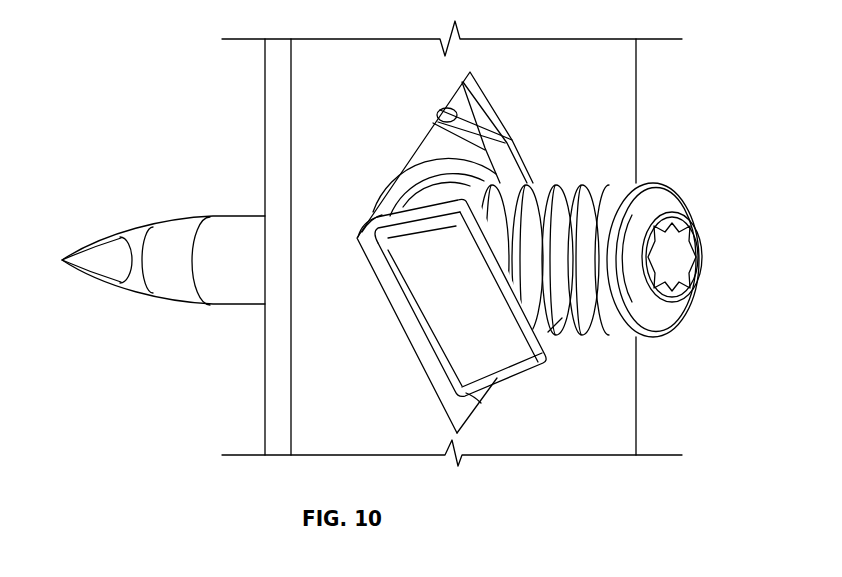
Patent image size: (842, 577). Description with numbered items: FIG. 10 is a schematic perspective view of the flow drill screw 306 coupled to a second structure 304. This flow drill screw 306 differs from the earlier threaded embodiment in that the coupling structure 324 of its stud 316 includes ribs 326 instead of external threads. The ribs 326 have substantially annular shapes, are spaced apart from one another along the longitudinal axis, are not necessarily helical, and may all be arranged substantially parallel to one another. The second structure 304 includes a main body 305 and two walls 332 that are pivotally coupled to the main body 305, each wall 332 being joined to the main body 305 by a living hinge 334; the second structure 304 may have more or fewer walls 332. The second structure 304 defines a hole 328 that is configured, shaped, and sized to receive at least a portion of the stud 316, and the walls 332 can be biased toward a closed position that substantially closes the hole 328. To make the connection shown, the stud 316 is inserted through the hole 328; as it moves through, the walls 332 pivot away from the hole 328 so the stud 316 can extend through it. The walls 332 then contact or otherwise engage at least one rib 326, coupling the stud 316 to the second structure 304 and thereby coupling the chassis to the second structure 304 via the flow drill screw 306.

The second structure 304 is at (639, 90).
The main body 305 is at (593, 435).
The flow drill screw 306 is at (222, 185).
The stud 316 is at (534, 349).
The coupling structure 324 is at (598, 338).
The ribs 326 is at (598, 182).
The hole 328 is at (455, 218).
The wall 332 is at (440, 120).
The living hinge 334 is at (387, 253).